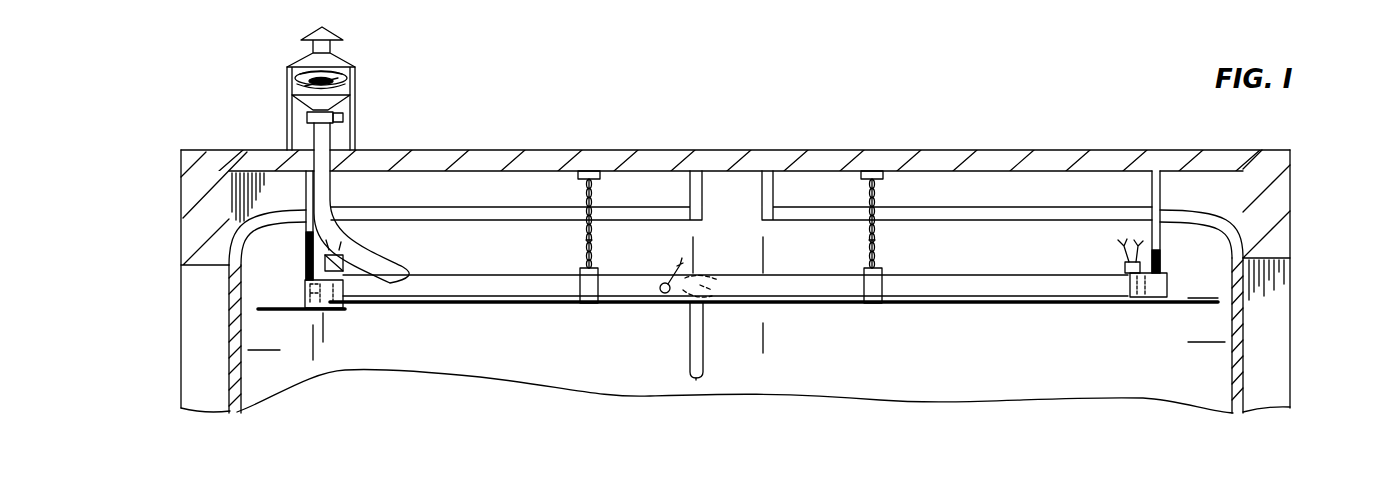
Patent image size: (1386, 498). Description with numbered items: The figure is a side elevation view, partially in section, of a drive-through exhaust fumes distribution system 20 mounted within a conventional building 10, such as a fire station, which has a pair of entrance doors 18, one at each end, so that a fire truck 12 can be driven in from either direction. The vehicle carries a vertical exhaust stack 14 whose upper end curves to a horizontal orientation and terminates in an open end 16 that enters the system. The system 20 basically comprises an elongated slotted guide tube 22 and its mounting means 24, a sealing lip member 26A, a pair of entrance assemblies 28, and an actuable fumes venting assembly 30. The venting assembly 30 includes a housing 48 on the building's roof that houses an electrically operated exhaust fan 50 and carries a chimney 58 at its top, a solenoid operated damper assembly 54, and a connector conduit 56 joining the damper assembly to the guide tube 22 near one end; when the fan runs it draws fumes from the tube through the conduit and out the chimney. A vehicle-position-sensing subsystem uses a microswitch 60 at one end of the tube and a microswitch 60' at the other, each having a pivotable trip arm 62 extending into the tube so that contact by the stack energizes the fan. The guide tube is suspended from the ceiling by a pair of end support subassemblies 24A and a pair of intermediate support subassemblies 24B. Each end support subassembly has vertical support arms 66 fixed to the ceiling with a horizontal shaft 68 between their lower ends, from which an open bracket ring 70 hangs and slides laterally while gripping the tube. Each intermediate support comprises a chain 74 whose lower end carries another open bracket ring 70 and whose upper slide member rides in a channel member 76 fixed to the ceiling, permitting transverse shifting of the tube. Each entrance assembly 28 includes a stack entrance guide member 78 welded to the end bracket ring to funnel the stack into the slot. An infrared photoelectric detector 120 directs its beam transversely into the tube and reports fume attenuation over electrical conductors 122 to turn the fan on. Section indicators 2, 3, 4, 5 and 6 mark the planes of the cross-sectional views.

The building 10 is at (997, 157).
The fire truck 12 is at (686, 328).
The exhaust stack 14 is at (700, 378).
The open end 16 is at (721, 340).
The entrance doors 18 is at (228, 363).
The drive-through exhaust fumes distribution system 20 is at (1003, 325).
The guide tube 22 is at (970, 280).
The mounting means 24 is at (880, 240).
The end support subassemblies 24A is at (306, 265).
The intermediate support subassemblies 24B is at (870, 203).
The sealing lip member 26A is at (880, 312).
The entrance assemblies 28 is at (228, 268).
The fumes venting assembly 30 is at (336, 88).
The housing 48 is at (357, 132).
The exhaust fan 50 is at (355, 78).
The solenoid operated damper assembly 54 is at (308, 117).
The connector conduit 56 is at (398, 263).
The chimney 58 is at (310, 43).
The microswitch 60 is at (394, 223).
The microswitch 60' is at (1110, 224).
The trip arm 62 is at (331, 308).
The support arms 66 is at (306, 212).
The horizontal shaft 68 is at (183, 266).
The open bracket ring 70 is at (599, 290).
The chain 74 is at (586, 238).
The channel member 76 is at (592, 172).
The stack entrance guide member 78 is at (287, 310).
The infrared photoelectric detector 120 is at (660, 290).
The electrical conductors 122 is at (690, 274).
The section line 2- 2 is at (248, 350).
The section line 3- 3 is at (758, 240).
The section line 4- 4 is at (727, 240).
The section line 5- 5 is at (330, 248).
The section line 6- 6 is at (345, 237).